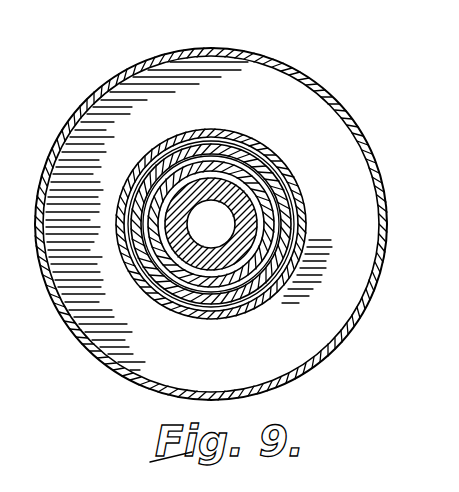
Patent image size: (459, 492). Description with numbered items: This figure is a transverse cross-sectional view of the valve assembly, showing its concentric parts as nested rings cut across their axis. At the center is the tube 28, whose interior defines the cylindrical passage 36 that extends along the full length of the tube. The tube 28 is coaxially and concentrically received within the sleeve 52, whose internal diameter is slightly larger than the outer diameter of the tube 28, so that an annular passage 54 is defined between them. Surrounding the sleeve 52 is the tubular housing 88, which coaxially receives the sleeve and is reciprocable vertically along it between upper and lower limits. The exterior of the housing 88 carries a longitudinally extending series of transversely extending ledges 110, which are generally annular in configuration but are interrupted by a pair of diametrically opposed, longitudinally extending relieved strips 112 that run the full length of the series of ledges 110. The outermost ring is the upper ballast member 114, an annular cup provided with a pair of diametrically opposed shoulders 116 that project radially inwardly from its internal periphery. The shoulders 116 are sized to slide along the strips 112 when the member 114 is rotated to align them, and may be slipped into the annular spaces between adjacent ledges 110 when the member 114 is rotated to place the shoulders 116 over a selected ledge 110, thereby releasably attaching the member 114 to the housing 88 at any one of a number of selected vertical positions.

The upper ballast member 114 is at (247, 52).
The relieved strips 112 is at (214, 150).
The tube 28 is at (236, 192).
The cylindrical passage 36 is at (258, 200).
The shoulders 116 is at (296, 213).
The sleeve 52 is at (300, 246).
The tubular housing 88 is at (290, 276).
The annular passage 54 is at (145, 190).
The ledges 110 is at (158, 297).